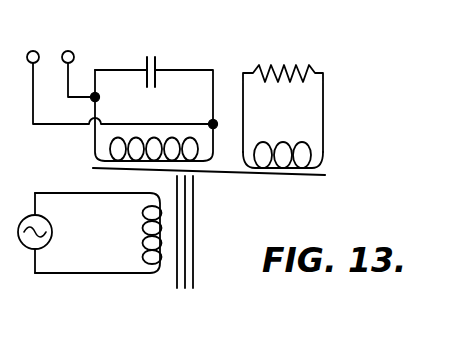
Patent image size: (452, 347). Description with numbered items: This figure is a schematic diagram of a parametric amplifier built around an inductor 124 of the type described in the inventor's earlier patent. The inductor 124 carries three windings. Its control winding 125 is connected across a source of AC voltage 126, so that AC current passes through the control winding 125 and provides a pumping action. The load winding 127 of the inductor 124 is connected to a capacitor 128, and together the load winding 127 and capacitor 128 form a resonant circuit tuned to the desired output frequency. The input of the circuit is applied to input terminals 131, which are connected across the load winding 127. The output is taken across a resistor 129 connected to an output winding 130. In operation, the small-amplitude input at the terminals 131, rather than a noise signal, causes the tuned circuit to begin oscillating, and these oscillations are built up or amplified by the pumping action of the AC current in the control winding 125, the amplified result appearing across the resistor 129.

The inductor 124 is at (203, 187).
The control winding 125 is at (145, 238).
The source of AC voltage 126 is at (32, 250).
The load winding 127 is at (108, 143).
The capacitor 128 is at (147, 63).
The resistor 129 is at (305, 69).
The output winding 130 is at (302, 150).
The input terminals 131 is at (46, 37).